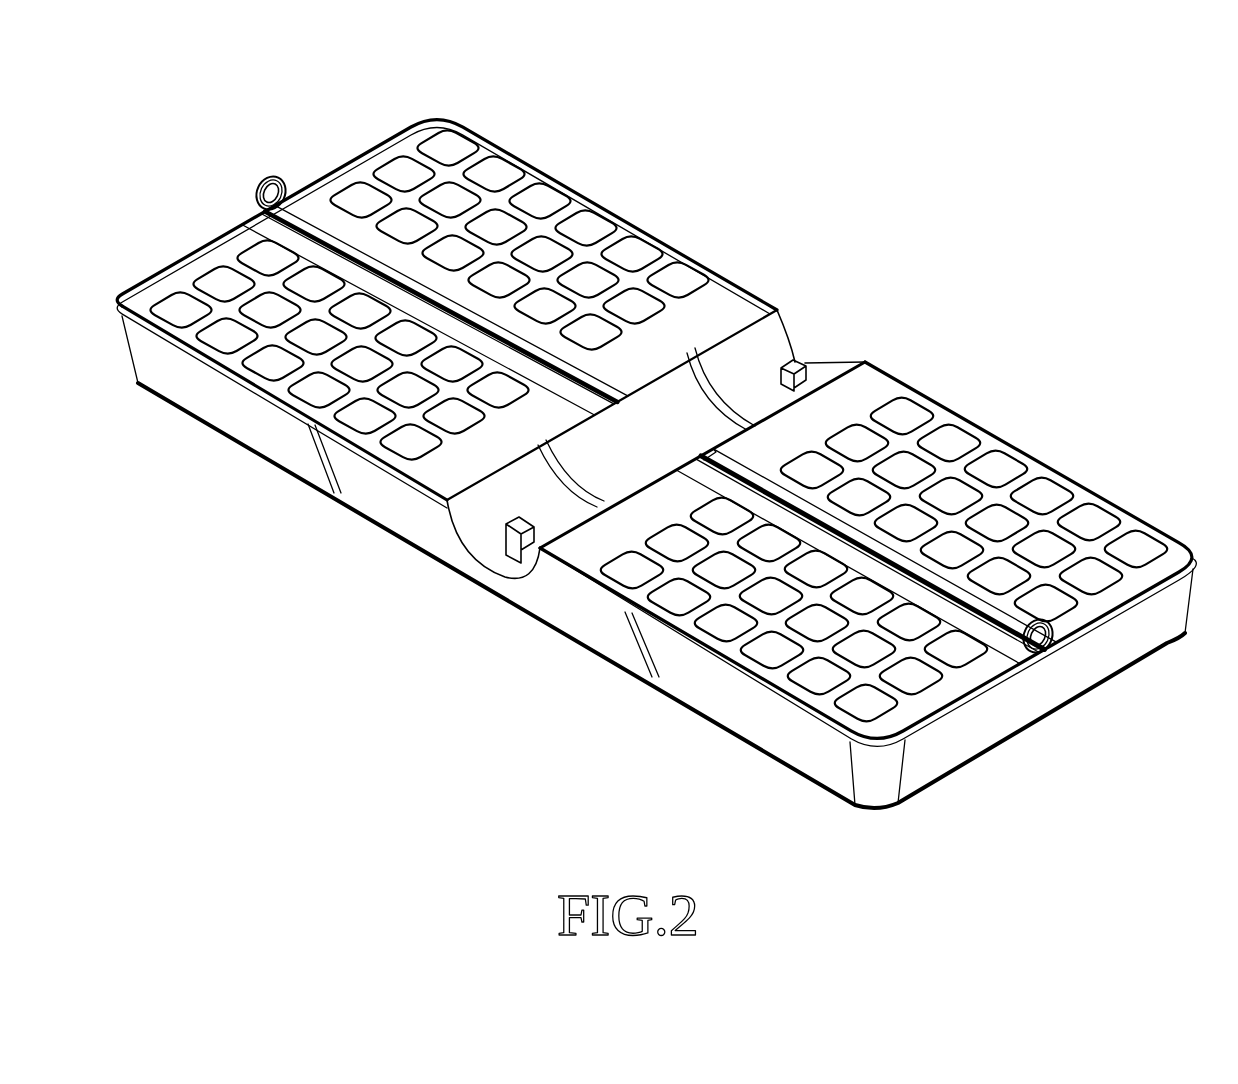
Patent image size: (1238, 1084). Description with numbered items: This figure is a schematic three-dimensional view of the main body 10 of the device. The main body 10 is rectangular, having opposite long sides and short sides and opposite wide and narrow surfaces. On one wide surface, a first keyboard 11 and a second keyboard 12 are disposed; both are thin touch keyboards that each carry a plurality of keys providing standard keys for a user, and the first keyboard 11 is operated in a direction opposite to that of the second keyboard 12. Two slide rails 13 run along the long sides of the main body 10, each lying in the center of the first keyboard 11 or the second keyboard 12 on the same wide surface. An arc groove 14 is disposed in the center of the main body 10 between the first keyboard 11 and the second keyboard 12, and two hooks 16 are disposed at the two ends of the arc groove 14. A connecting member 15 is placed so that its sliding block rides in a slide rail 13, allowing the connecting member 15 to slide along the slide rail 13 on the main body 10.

The main body 10 is at (148, 87).
The first keyboard 11 is at (275, 362).
The second keyboard 12 is at (945, 494).
The slide rail 13 is at (455, 300).
The arc groove 14 is at (703, 413).
The connecting member 15 is at (270, 176).
The hook 16 is at (507, 537).